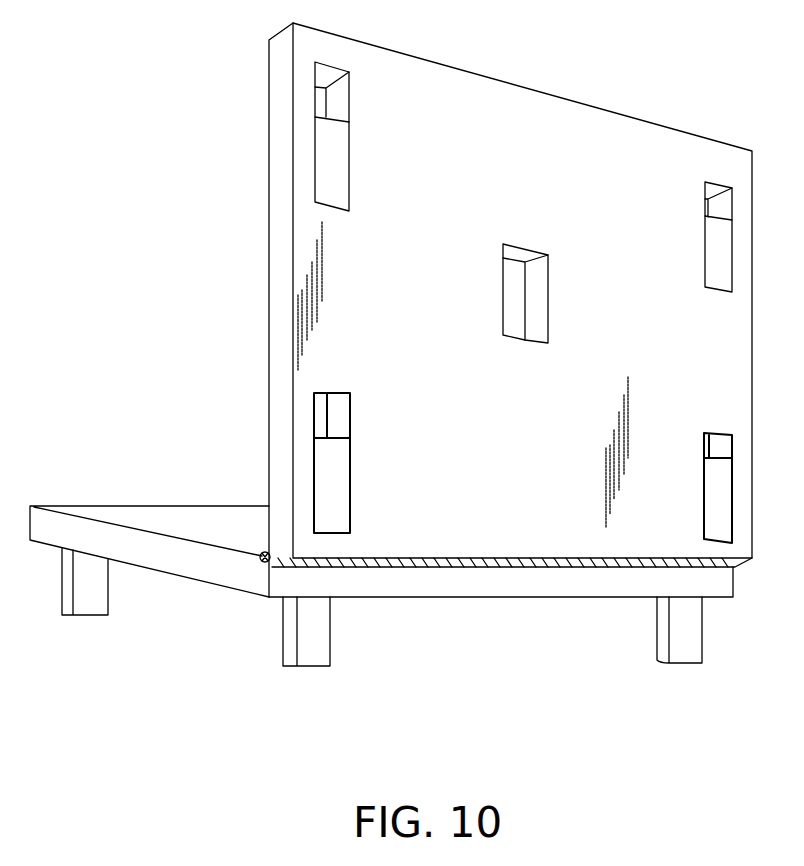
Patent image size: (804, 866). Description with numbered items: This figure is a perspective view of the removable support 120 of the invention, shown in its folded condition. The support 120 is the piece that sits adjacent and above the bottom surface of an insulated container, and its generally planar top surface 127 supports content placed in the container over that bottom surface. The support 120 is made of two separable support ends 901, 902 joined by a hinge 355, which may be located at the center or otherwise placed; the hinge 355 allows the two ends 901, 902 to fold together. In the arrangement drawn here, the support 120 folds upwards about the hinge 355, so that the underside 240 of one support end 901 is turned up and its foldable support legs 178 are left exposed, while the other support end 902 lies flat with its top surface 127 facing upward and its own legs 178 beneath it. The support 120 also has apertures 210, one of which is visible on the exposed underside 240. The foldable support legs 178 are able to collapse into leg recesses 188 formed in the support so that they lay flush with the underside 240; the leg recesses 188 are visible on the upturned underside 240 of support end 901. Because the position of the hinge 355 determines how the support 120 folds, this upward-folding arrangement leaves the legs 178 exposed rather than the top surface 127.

The removable support 120 is at (397, 342).
The separable support end 901 is at (268, 273).
The underside 240 is at (433, 327).
The leg recess 188 is at (337, 105).
The foldable support leg 178 is at (335, 168).
The aperture 210 is at (548, 300).
The separable support end 902 is at (177, 577).
The top surface 127 is at (117, 505).
The hinge 355 is at (262, 561).